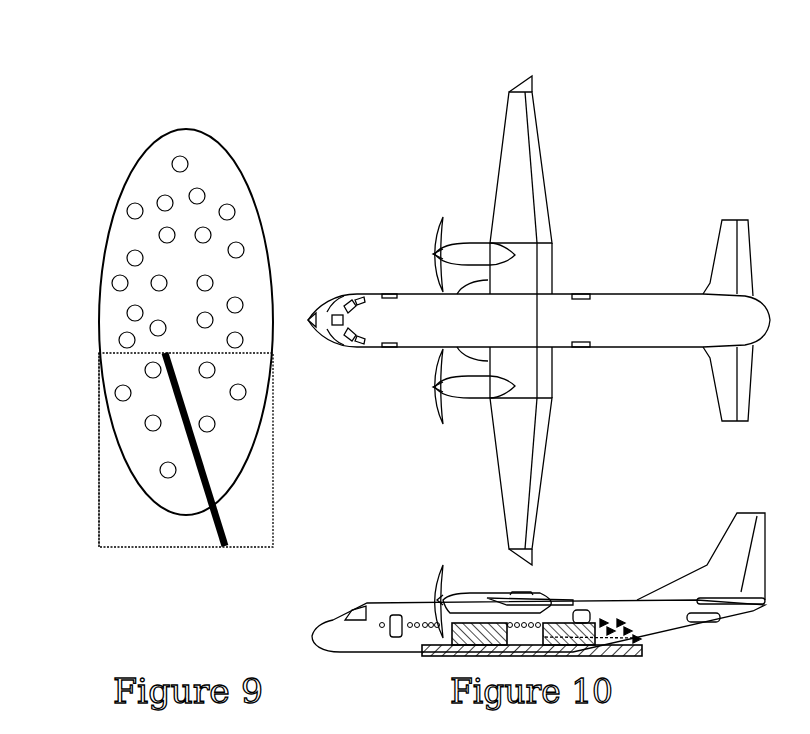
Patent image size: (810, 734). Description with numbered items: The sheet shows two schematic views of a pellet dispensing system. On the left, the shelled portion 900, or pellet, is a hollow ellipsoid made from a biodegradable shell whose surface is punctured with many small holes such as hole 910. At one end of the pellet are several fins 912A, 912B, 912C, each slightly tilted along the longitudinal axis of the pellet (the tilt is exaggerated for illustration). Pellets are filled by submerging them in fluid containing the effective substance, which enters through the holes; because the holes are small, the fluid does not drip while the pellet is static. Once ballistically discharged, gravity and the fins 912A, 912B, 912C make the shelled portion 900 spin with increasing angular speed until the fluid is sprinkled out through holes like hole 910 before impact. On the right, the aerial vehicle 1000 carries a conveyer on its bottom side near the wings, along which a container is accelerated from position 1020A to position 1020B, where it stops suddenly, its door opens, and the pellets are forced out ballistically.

In FIG. 9, the shelled portion 900 is at (227, 153).
In FIG. 10, the shelled portion 900 is at (622, 622).
In FIG. 9, the hole 910 is at (152, 485).
In FIG. 9, the fin 912A is at (273, 472).
In FIG. 9, the fin 912B is at (215, 528).
In FIG. 9, the fin 912C is at (99, 510).
In FIG. 10, the aerial vehicle 1000 is at (630, 294).
In FIG. 10, the position of container 1020A is at (472, 622).
In FIG. 10, the position of container 1020B is at (577, 606).